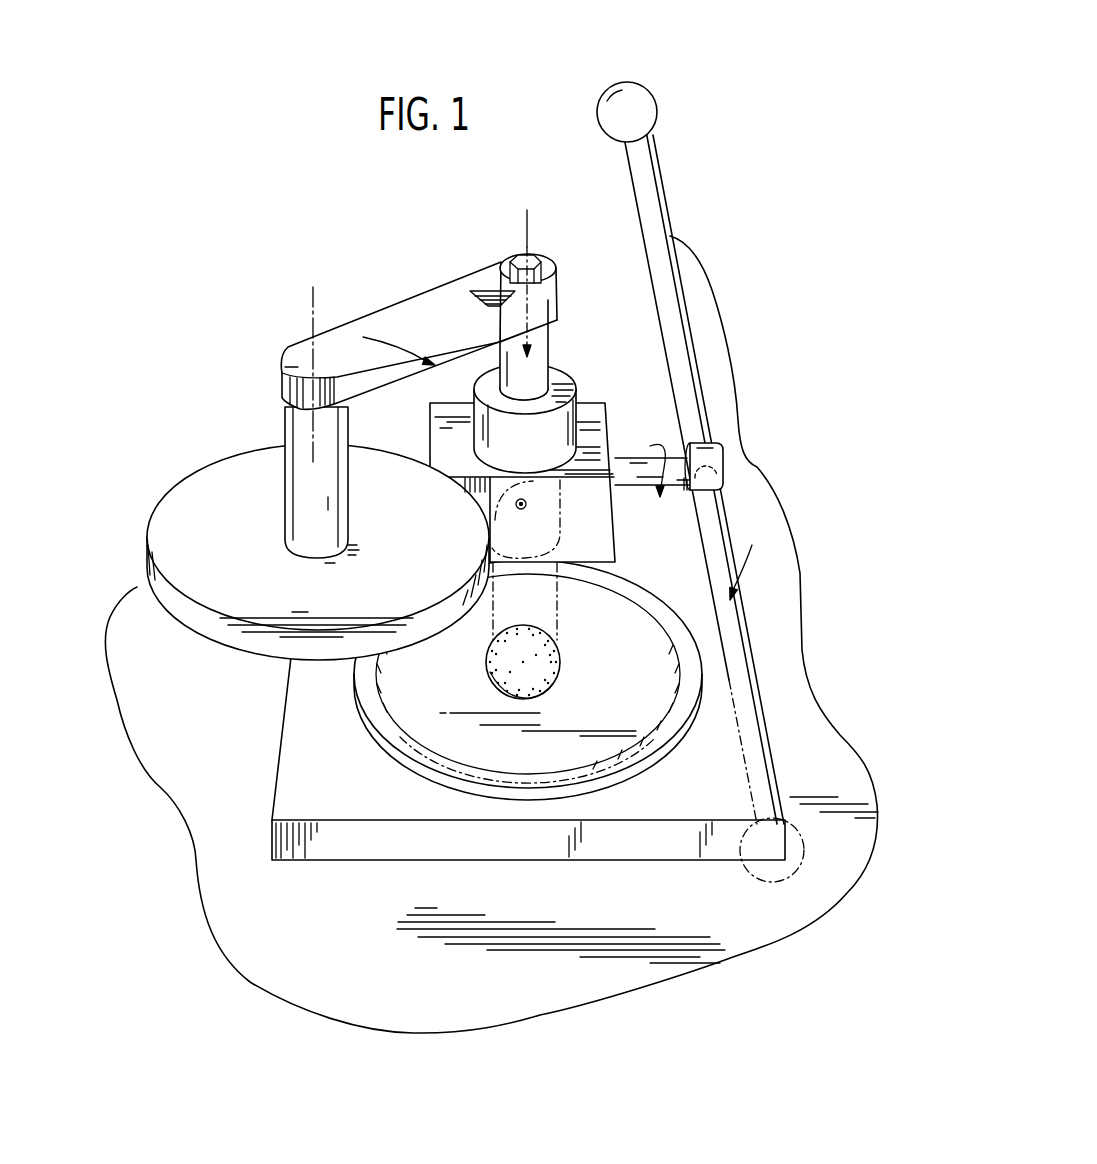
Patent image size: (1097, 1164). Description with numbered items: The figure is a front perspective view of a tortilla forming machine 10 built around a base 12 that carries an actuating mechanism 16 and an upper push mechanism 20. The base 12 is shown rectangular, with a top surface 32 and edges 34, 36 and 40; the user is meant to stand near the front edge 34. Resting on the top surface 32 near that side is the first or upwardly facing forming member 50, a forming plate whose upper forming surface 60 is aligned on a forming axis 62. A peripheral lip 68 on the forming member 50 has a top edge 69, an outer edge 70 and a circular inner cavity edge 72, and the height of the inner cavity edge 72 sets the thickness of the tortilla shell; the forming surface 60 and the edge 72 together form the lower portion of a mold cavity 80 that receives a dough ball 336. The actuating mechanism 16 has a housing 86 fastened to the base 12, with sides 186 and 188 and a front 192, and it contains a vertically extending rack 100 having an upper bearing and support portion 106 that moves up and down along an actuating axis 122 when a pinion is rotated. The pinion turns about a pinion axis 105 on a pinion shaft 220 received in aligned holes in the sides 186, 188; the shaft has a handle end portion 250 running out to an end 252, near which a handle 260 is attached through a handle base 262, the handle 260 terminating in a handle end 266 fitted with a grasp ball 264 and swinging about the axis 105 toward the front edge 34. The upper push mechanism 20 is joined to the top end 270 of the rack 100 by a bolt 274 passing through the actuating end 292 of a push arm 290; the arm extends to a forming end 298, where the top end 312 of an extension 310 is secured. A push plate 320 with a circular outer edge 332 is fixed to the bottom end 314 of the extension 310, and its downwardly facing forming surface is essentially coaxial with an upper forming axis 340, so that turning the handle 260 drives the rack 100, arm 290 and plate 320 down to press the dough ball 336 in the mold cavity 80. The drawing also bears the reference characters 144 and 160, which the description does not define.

The tortilla forming machine 10 is at (735, 210).
The base 12 is at (273, 783).
The actuating mechanism 16 is at (602, 390).
The upper push mechanism 20 is at (352, 305).
The top surface 32 is at (333, 807).
The front edge 34 is at (657, 847).
The edge 36 is at (778, 731).
The edge 40 is at (282, 715).
The first or upwardly facing forming member 50 is at (623, 624).
The first or upper forming surface 60 is at (430, 712).
The forming axis 62 is at (525, 605).
The peripheral lip 68 is at (680, 640).
The top edge 69 is at (643, 750).
The outer edge 70 is at (548, 792).
The inner cavity edge 72 is at (756, 560).
The mold cavity 80 is at (492, 747).
The housing 86 is at (604, 436).
The rack 100 is at (552, 363).
The pinion axis 105 is at (743, 463).
The upper bearing and support portion 106 is at (617, 333).
The actuating axis 122 is at (527, 223).
The pin hole 144 is at (530, 503).
The lower housing 160 is at (480, 437).
The side 186 is at (430, 425).
The side 188 is at (605, 420).
The front 192 is at (480, 490).
The pinion shaft 220 is at (725, 486).
The handle end portion 250 is at (620, 458).
The end 252 is at (728, 468).
The handle 260 is at (655, 165).
The handle base 262 is at (695, 468).
The grasp ball 264 is at (657, 100).
The handle end 266 is at (622, 85).
The top end 270 is at (552, 348).
The bolt 274 is at (514, 262).
The push arm 290 is at (398, 308).
The actuating end 292 is at (550, 263).
The forming end 298 is at (281, 370).
The extension 310 is at (300, 502).
The top end 312 is at (280, 403).
The bottom end 314 is at (293, 552).
The push plate 320 is at (218, 482).
The circular outer edge 332 is at (207, 622).
The dough ball 336 is at (538, 677).
The upper forming axis 340 is at (313, 305).